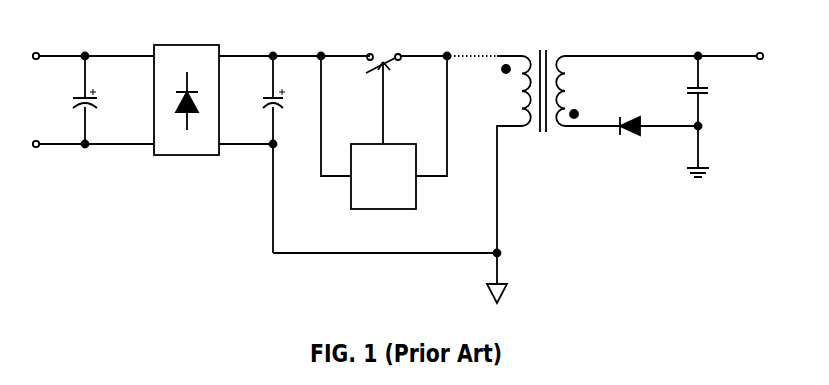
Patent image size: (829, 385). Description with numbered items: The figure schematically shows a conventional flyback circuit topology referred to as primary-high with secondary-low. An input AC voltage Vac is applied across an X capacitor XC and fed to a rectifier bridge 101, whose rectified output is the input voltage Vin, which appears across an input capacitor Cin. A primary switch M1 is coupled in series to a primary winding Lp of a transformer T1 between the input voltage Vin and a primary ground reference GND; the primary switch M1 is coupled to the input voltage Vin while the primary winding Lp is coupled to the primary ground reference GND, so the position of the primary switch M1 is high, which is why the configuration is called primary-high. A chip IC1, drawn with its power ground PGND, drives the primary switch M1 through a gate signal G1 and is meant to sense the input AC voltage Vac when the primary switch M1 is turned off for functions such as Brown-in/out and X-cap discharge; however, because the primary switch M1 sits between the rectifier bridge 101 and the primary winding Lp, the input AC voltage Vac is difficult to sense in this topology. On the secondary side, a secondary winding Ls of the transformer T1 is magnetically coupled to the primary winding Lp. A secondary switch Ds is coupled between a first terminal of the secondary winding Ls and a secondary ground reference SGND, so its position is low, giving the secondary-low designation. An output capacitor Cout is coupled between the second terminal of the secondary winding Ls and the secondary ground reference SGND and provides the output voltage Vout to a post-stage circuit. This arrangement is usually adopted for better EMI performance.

The rectifier bridge 101 is at (183, 44).
The input AC voltage Vac is at (82, 100).
The X capacitor XC is at (100, 100).
The input voltage Vin is at (294, 87).
The input capacitor Cin is at (258, 154).
The primary switch M1 is at (408, 52).
The gate drive signal G1 is at (395, 103).
The chip IC1 is at (384, 132).
The power ground PGND is at (447, 192).
The primary ground reference GND is at (414, 277).
The primary winding Lp is at (490, 154).
The transformer T1 is at (545, 78).
The secondary winding Ls is at (627, 91).
The secondary switch Ds is at (659, 137).
The output capacitor Cout is at (721, 91).
The output voltage Vout is at (755, 57).
The secondary ground reference SGND is at (728, 153).